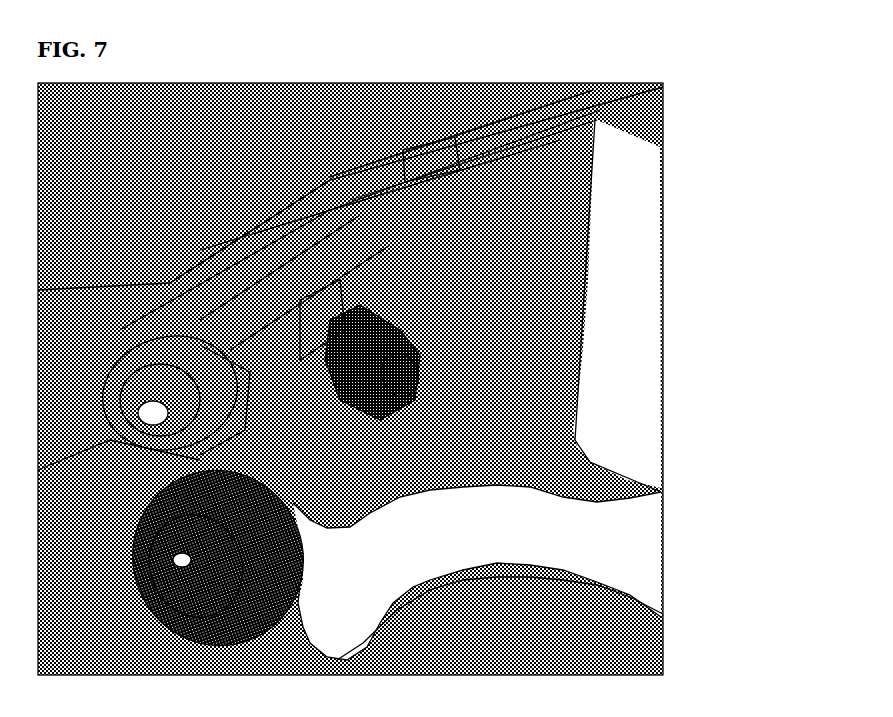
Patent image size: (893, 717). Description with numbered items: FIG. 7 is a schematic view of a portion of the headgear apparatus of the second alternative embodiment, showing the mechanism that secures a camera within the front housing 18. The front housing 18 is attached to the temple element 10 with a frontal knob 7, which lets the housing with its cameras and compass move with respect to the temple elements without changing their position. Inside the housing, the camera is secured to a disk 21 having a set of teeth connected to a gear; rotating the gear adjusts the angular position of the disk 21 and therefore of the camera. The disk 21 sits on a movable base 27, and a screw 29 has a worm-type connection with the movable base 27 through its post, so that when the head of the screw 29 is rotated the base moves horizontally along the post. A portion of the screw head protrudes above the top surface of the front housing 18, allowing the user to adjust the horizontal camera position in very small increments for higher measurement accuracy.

The frontal knob 7 is at (225, 583).
The temple element 10 is at (547, 532).
The front housing 18 is at (533, 137).
The disk 21 is at (347, 312).
The movable base 27 is at (268, 292).
The screw 29 is at (162, 343).